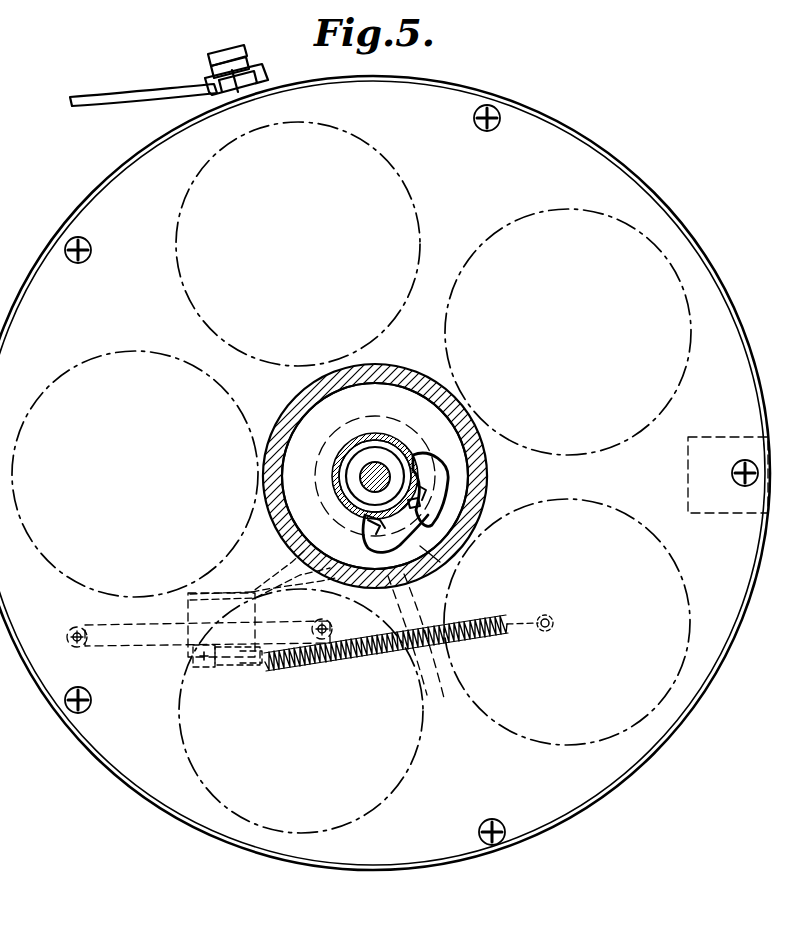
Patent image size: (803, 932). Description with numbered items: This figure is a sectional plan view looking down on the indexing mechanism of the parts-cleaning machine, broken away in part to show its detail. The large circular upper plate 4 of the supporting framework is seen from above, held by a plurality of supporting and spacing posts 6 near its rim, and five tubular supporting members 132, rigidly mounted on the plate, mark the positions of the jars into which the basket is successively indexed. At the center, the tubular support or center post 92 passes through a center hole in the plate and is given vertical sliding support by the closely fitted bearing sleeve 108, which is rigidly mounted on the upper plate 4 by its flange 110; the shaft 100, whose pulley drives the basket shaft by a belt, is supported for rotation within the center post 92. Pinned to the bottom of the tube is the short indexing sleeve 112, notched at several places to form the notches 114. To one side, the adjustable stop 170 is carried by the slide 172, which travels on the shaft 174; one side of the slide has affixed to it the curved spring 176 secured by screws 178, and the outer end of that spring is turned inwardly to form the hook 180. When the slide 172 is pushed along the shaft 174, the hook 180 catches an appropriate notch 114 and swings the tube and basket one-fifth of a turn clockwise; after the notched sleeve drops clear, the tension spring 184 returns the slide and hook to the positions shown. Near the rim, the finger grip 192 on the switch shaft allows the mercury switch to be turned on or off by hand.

The upper plate 4 is at (722, 302).
The supporting and spacing posts 6 is at (496, 128).
The finger grip 192 is at (232, 52).
The flange 110 is at (305, 513).
The tubular supporting member 132 is at (413, 380).
The tubular support or center post 92 is at (346, 474).
The bearing sleeve 108 is at (346, 440).
The shaft 100 is at (375, 462).
The hook 180 is at (432, 462).
The indexing sleeve 112 is at (402, 506).
The notches 114 is at (424, 486).
The curved spring 176 is at (420, 548).
The screws 178 is at (290, 562).
The slide 172 is at (195, 607).
The shaft 174 is at (149, 636).
The adjustable stop 170 is at (205, 668).
The tension spring 184 is at (408, 652).